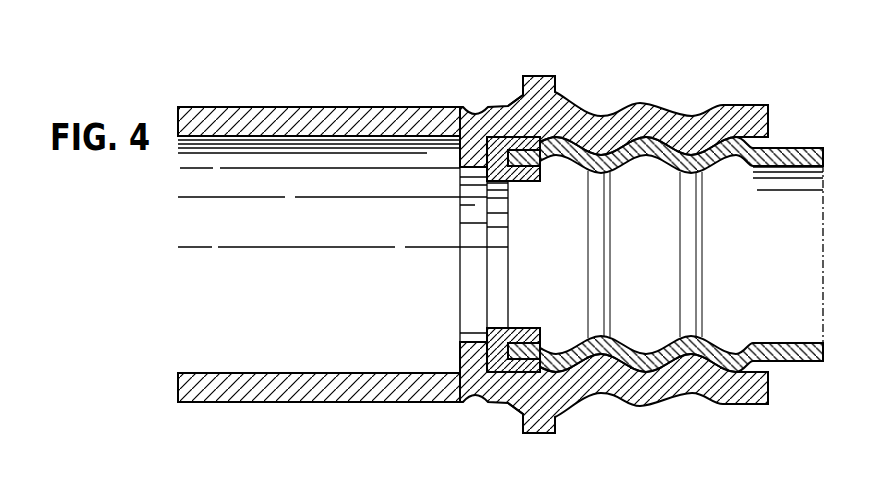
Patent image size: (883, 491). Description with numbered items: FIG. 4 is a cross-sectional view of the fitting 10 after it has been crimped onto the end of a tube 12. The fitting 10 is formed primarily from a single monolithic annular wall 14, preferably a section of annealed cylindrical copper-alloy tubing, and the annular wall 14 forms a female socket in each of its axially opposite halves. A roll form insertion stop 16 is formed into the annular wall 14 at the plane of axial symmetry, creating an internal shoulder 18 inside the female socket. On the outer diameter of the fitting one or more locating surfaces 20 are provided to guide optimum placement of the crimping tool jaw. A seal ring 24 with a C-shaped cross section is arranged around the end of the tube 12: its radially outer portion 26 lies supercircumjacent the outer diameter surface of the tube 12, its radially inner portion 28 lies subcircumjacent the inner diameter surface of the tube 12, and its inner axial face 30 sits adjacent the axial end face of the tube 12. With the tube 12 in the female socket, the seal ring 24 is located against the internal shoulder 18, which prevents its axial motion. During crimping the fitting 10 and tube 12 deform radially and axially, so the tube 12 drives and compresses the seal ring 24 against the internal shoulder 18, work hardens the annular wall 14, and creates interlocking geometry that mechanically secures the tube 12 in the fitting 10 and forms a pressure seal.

The fitting 10 is at (350, 107).
The tube 12 is at (808, 147).
The annular wall 14 is at (634, 157).
The roll form insertion stop 16 is at (470, 107).
The internal shoulder 18 is at (458, 157).
The locating surface 20 is at (543, 433).
The seal ring 24 is at (493, 265).
The radially outer portion 26 is at (500, 137).
The radially inner portion 28 is at (524, 181).
The inner axial face 30 is at (462, 341).